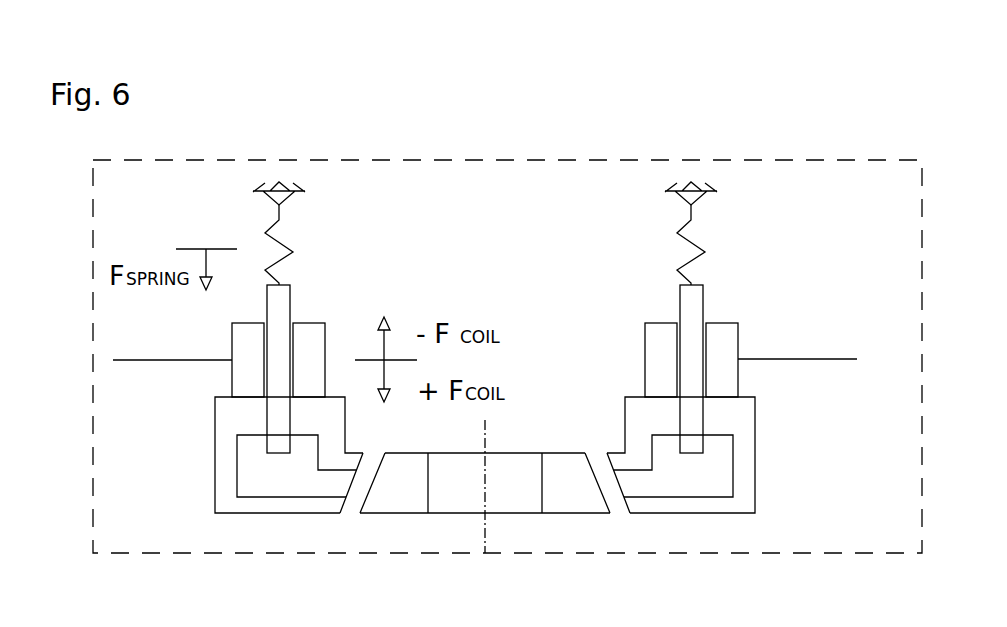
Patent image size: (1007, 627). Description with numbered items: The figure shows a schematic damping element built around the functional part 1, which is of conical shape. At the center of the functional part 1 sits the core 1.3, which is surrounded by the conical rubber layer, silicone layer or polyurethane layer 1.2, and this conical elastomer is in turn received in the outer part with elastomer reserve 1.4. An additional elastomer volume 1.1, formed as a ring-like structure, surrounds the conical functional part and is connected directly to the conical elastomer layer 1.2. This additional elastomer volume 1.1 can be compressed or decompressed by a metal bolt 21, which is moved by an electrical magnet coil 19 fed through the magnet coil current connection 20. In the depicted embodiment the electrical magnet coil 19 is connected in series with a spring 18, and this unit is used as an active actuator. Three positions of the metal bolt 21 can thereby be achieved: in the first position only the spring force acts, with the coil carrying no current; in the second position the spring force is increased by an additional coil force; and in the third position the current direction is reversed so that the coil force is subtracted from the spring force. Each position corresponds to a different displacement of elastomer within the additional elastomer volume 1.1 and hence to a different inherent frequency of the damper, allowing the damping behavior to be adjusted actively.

The functional part 1 is at (120, 553).
The additional elastomer volume 1.1 is at (277, 478).
The rubber layer/silicone layer/polyurethane layer 1.2 is at (362, 490).
The core 1.3 is at (563, 487).
The outer part with elastomer reserve 1.4 is at (748, 493).
The spring 18 is at (683, 245).
The electrical magnet coil 19 is at (640, 351).
The magnet coil current connection 20 is at (826, 359).
The metal bolt 21 is at (693, 302).